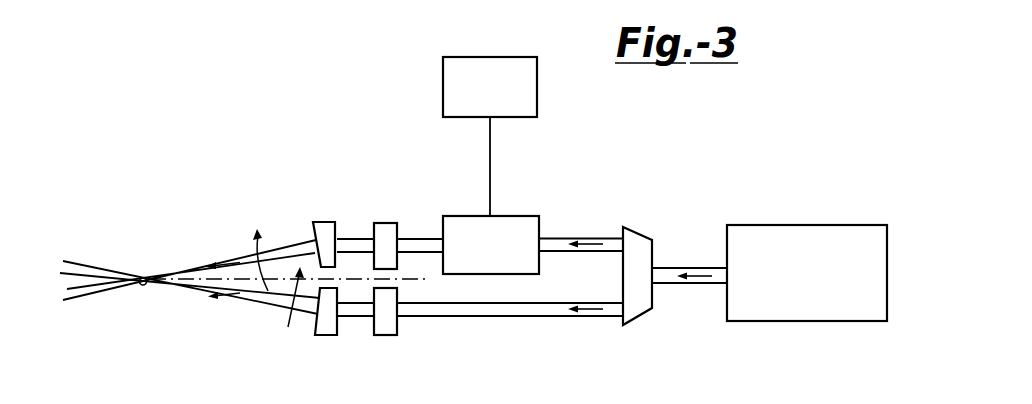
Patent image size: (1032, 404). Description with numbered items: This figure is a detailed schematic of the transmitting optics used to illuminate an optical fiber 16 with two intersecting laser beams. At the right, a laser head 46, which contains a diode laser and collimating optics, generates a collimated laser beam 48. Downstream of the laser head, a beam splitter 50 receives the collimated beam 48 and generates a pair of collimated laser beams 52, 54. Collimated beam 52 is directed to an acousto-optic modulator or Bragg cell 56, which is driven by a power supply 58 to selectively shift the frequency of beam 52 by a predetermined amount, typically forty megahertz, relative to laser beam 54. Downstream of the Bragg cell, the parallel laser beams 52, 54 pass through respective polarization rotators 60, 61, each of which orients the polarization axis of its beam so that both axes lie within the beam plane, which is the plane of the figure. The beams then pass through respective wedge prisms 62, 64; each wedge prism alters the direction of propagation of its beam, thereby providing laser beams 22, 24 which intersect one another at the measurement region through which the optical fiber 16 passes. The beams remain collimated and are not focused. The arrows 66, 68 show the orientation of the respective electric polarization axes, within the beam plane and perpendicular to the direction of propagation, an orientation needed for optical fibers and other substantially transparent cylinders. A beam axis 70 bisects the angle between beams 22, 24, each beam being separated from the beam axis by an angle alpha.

The optical fiber 16 is at (142, 286).
The collimated laser beam 22 is at (188, 264).
The collimated laser beam 24 is at (180, 297).
The laser head 46 is at (770, 225).
The collimated laser beam 48 is at (670, 284).
The beam splitter 50 is at (637, 229).
The collimated laser beam 52 is at (553, 253).
The collimated laser beam 54 is at (553, 318).
The Bragg cell 56 is at (530, 216).
The power supply 58 is at (527, 56).
The polarization rotator 60 is at (383, 223).
The polarization rotator 61 is at (391, 336).
The wedge prism 62 is at (327, 222).
The wedge prism 64 is at (318, 336).
The polarization axis arrow 66 is at (270, 292).
The polarization axis arrow 68 is at (292, 292).
The beam axis 70 is at (364, 281).